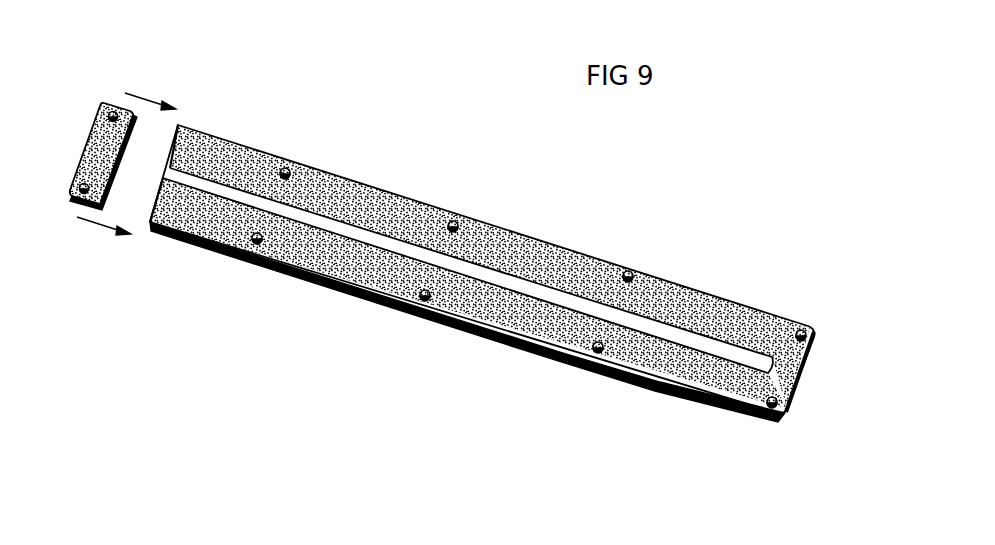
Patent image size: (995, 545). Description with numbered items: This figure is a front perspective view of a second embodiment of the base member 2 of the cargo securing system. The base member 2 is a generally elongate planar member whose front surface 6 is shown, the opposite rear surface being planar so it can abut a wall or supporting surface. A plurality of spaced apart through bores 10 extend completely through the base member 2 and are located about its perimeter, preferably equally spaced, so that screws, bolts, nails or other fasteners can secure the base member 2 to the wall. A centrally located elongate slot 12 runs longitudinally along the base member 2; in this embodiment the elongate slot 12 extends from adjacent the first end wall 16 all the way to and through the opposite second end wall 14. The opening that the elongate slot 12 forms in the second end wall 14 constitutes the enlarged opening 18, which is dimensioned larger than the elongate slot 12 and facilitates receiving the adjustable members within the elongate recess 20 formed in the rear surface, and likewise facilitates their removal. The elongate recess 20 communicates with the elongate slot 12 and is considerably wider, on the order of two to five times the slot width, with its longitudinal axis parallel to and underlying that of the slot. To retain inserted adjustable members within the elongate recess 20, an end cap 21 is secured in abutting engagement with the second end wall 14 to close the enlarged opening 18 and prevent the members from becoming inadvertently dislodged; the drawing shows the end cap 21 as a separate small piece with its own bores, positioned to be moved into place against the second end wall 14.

The base member 2 is at (330, 316).
The front surface 6 is at (713, 312).
The through bores 10 is at (453, 222).
The elongate slot 12 is at (552, 293).
The second end wall 14 is at (210, 137).
The first end wall 16 is at (800, 380).
The enlarged opening 18 is at (166, 168).
The elongate recess 20 is at (348, 232).
The insert strip 21 is at (90, 140).